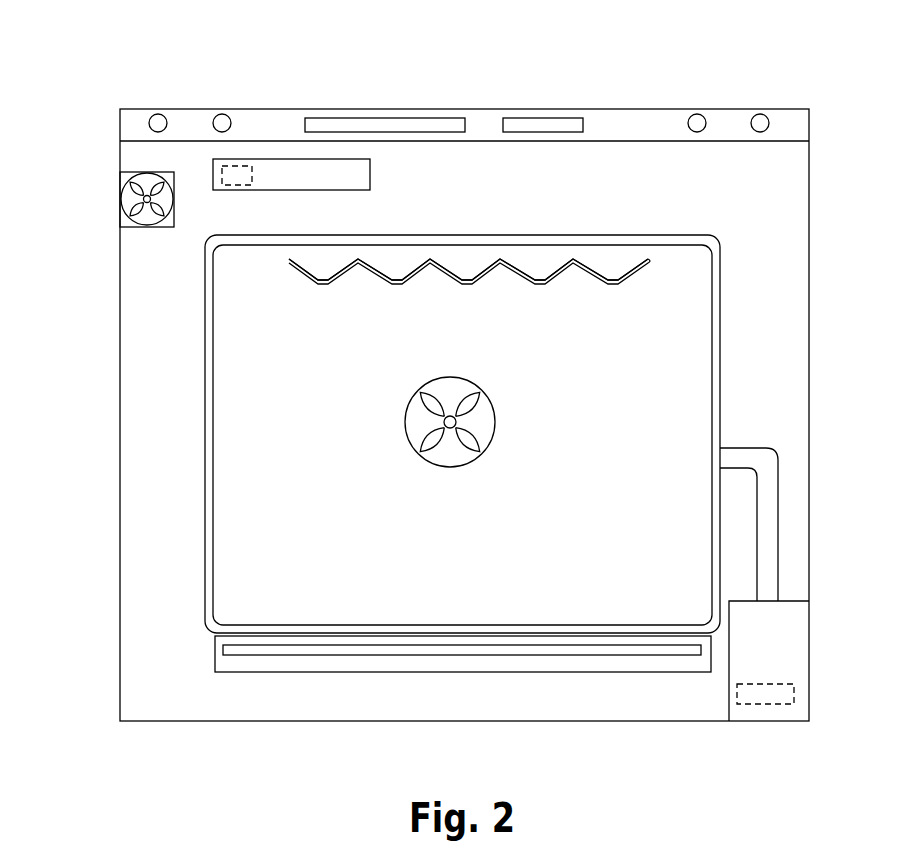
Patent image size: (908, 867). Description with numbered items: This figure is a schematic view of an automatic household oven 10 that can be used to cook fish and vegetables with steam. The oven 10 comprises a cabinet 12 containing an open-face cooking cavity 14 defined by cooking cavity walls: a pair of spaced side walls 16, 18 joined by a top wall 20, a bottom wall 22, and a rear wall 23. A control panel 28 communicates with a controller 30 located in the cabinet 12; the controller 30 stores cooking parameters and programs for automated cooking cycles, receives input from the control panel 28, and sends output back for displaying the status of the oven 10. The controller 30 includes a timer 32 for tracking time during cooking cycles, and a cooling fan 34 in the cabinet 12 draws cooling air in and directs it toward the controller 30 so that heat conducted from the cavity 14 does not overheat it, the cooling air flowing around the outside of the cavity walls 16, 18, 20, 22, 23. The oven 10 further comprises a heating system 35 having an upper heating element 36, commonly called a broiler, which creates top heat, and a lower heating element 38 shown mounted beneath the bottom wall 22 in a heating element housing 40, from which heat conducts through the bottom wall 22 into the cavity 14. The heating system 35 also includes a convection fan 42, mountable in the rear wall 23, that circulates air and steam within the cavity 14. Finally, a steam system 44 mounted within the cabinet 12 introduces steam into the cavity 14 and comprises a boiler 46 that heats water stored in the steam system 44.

The automatic household oven 10 is at (130, 76).
The cabinet 12 is at (118, 392).
The cooking cavity 14 is at (490, 537).
The side wall 16 is at (712, 410).
The side wall 18 is at (211, 456).
The top wall 20 is at (622, 248).
The bottom wall 22 is at (318, 628).
The rear wall 23 is at (668, 498).
The control panel 28 is at (478, 108).
The controller 30 is at (278, 159).
The timer 32 is at (238, 166).
The cooling fan 34 is at (142, 226).
The heating system 35 is at (382, 283).
The upper heating element 36 is at (628, 277).
The lower heating element 38 is at (380, 650).
The heating element housing 40 is at (712, 668).
The convection fan 42 is at (495, 407).
The steam system 44 is at (796, 601).
The boiler 46 is at (794, 688).